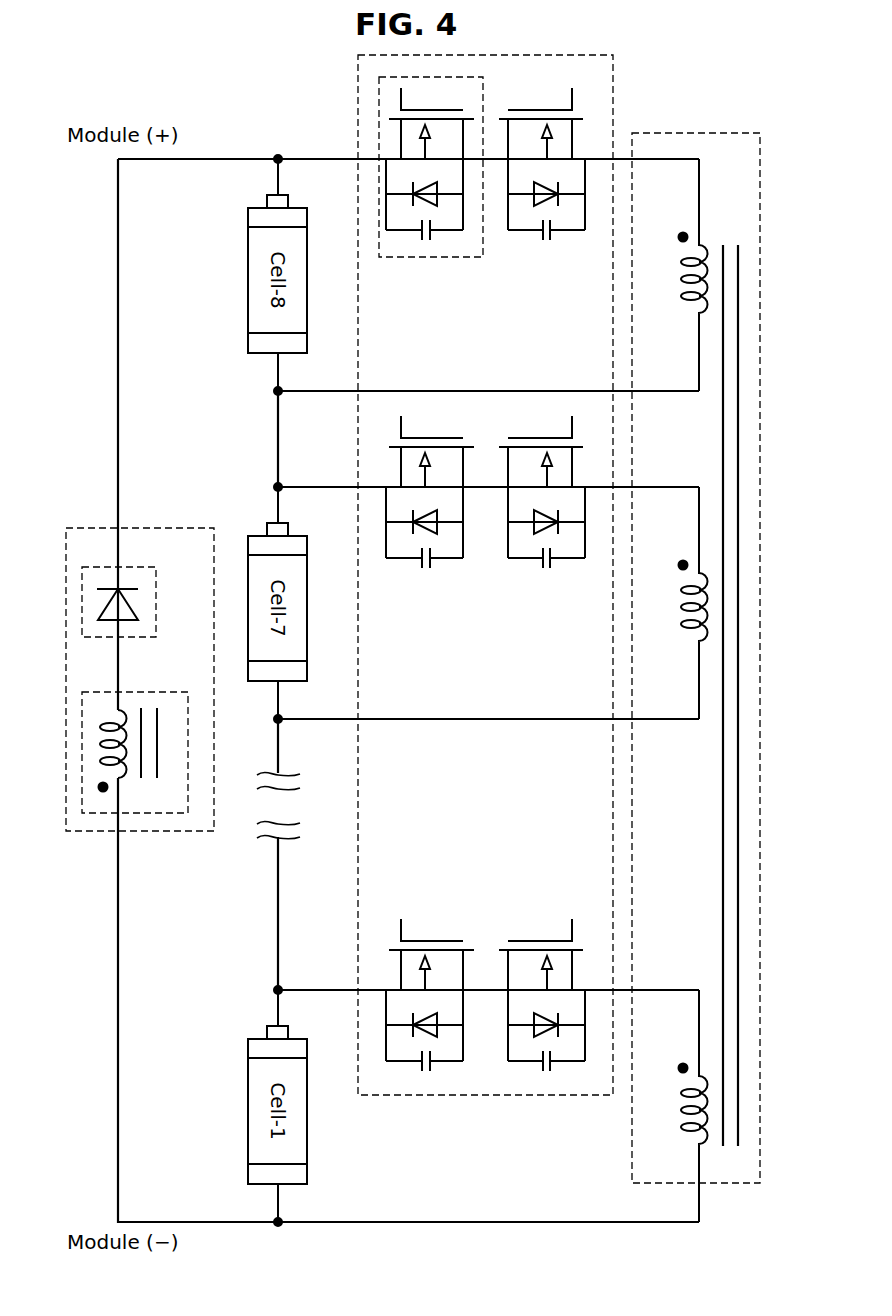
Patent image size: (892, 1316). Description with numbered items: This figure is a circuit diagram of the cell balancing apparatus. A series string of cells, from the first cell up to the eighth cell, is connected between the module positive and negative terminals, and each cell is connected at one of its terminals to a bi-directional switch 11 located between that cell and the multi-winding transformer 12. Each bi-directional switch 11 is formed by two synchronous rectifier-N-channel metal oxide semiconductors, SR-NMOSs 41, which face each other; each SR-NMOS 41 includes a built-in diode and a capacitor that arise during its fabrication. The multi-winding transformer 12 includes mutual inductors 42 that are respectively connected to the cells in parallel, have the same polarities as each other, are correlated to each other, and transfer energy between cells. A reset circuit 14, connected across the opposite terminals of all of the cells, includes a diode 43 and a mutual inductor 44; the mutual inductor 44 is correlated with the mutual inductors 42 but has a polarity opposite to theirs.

The bi-directional switch 11 is at (485, 559).
The multi-winding transformer 12 is at (698, 662).
The reset circuit 14 is at (140, 664).
The synchronous rectifier-N-channel metal oxide semiconductor (SR-NMOS) 41 is at (431, 257).
The mutual inductor 42 is at (688, 279).
The diode 43 is at (137, 567).
The mutual inductor 44 is at (137, 692).